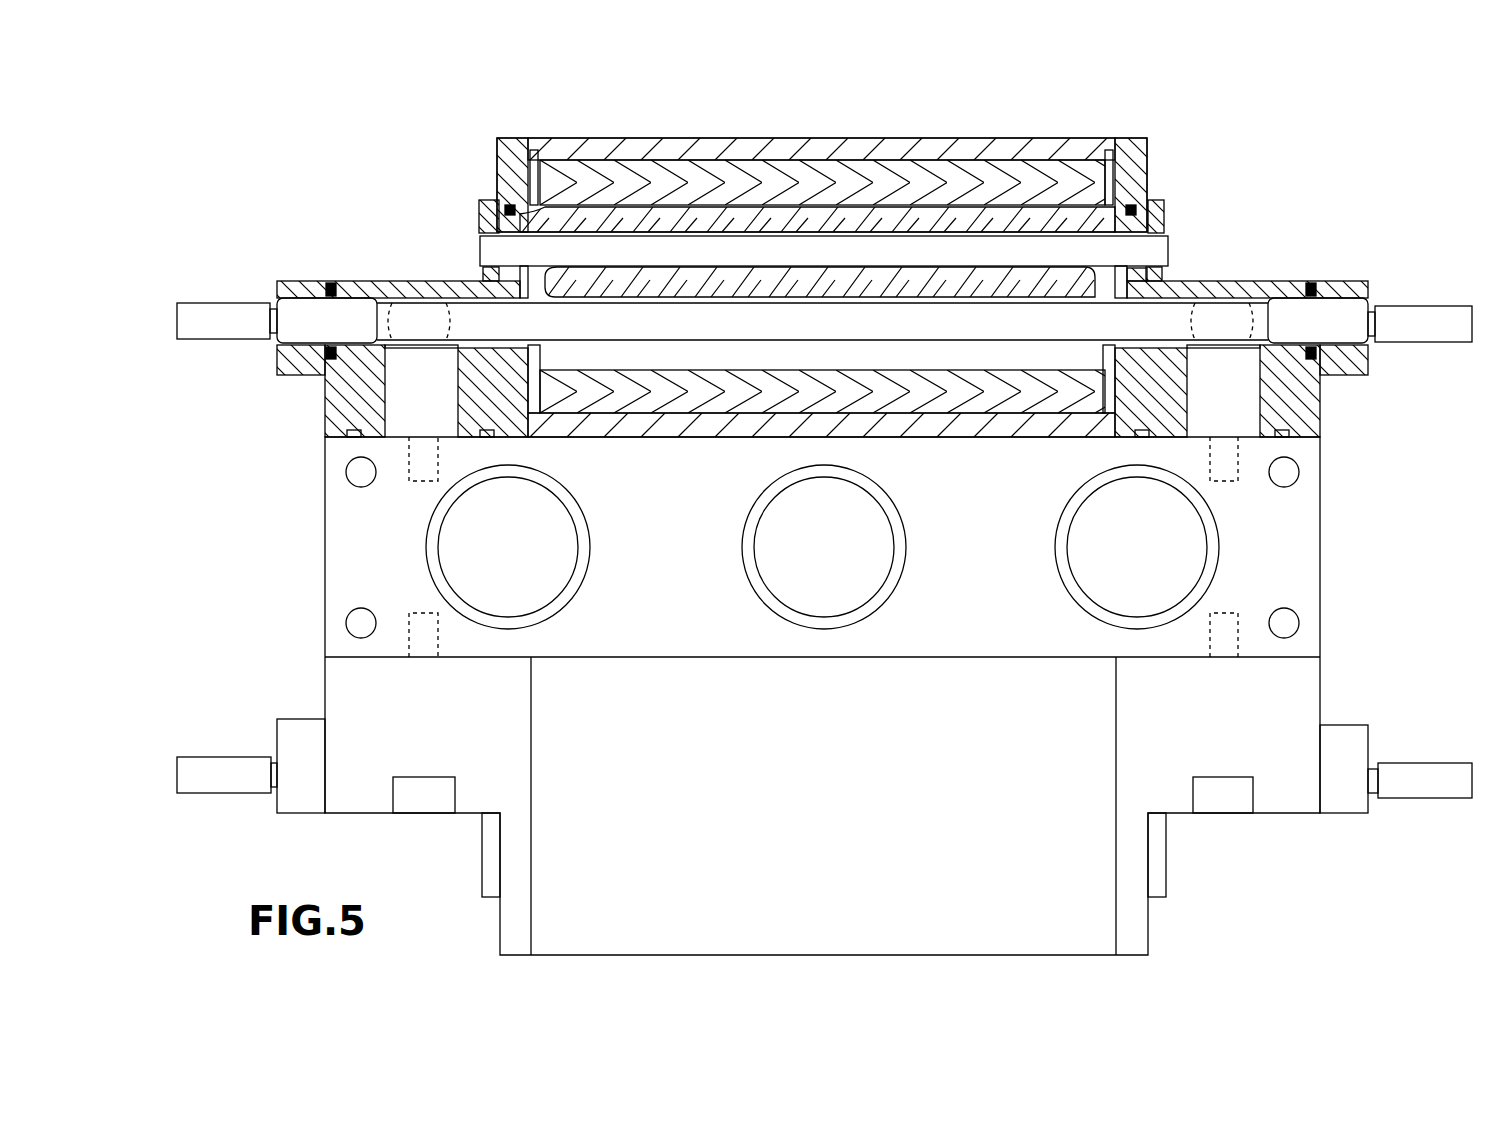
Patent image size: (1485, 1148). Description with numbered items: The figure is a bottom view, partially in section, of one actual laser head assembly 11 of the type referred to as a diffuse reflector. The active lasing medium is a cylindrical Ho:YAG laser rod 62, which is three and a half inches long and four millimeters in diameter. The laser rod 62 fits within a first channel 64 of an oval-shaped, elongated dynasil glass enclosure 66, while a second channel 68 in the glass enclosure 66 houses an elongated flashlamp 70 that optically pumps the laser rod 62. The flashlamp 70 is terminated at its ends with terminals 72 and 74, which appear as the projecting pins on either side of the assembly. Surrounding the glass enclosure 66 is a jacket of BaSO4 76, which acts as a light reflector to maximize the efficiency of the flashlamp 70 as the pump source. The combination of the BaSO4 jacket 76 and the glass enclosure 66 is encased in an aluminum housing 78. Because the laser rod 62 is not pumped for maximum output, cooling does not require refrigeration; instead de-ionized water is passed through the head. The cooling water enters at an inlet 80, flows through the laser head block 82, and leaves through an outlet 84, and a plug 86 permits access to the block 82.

The laser head assembly 11 is at (858, 113).
The laser rod 62 is at (479, 232).
The first channel 64 is at (1130, 216).
The glass enclosure 66 is at (708, 220).
The second channel 68 is at (558, 298).
The flashlamp 70 is at (277, 305).
The terminal 72 is at (218, 327).
The terminal 74 is at (1418, 335).
The jacket of BaSO4 76 is at (1020, 176).
The aluminum housing 78 is at (910, 152).
The inlet 80 is at (868, 598).
The laser head block 82 is at (325, 545).
The outlet 84 is at (1085, 594).
The plug 86 is at (558, 592).